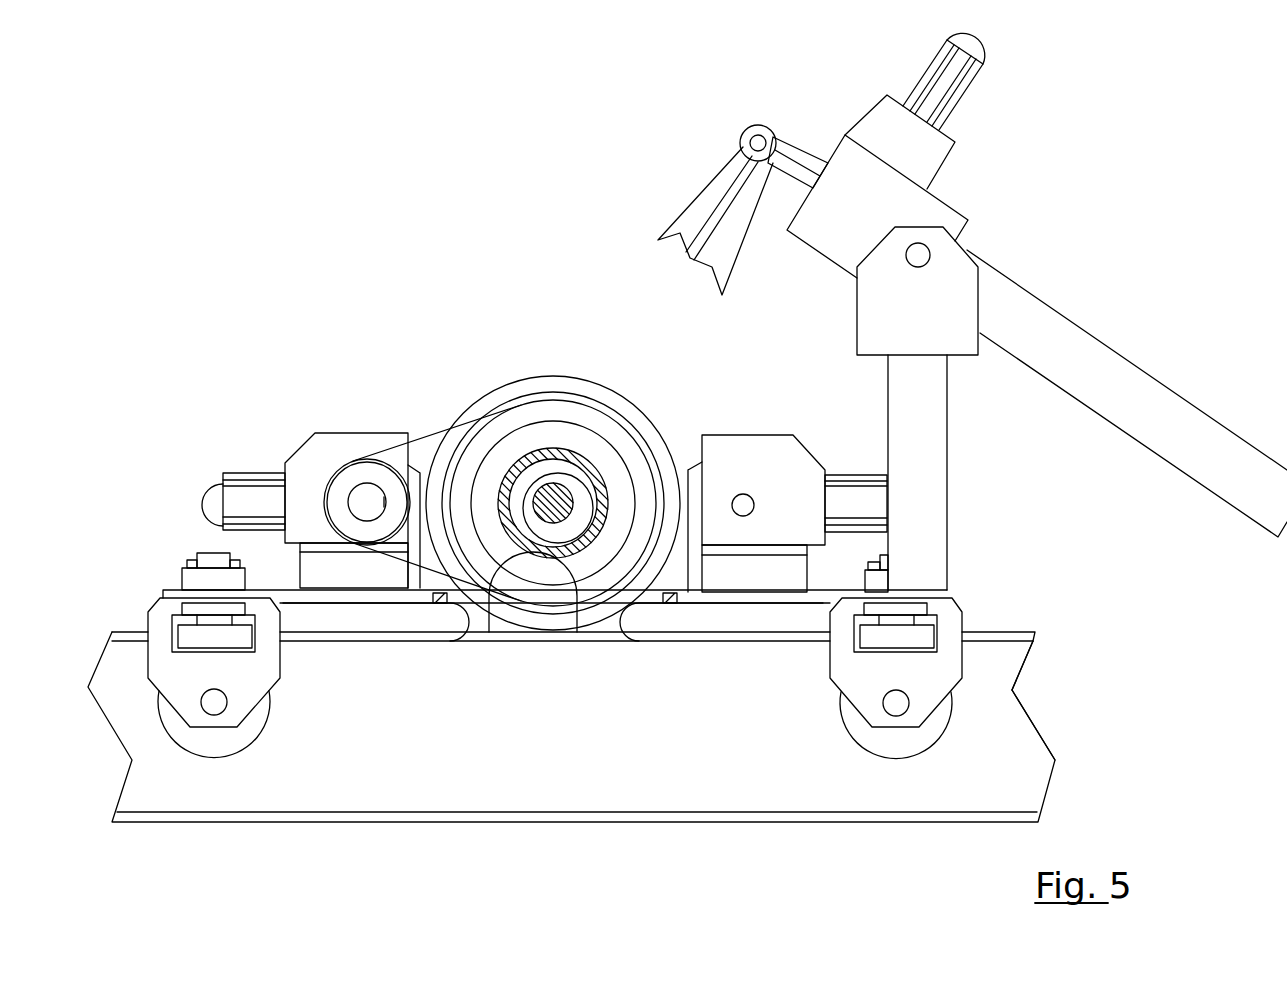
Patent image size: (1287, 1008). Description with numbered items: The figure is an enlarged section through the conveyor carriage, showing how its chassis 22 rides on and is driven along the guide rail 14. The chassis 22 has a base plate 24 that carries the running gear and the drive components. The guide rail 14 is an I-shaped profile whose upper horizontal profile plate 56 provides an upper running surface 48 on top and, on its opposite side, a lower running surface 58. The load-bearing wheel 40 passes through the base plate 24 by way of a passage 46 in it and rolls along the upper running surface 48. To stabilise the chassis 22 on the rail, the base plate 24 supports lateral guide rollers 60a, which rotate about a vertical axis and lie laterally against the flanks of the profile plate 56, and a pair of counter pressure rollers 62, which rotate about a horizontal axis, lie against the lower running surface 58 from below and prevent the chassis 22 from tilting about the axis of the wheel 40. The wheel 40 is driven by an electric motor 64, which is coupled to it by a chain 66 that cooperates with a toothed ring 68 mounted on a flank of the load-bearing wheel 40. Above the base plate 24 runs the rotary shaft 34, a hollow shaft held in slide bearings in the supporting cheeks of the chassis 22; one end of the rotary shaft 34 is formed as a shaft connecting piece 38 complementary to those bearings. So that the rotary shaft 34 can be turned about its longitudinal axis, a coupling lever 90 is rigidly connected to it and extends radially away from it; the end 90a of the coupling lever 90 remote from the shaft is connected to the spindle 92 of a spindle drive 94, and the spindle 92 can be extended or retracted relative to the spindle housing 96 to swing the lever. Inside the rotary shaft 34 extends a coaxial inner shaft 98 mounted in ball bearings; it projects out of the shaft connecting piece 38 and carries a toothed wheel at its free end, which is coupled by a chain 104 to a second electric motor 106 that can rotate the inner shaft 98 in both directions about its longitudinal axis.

The guide rail 14 is at (1007, 777).
The chassis 22 is at (1027, 574).
The base plate 24 is at (327, 593).
The rotary shaft 34 is at (560, 557).
The shaft connecting piece 38 is at (530, 546).
The load-bearing wheel 40 is at (620, 614).
The passage 46 is at (450, 594).
The upper running surface 48 is at (1018, 635).
The upper horizontal profile plate 56 is at (1035, 642).
The lower running surface 58 is at (1013, 690).
The lateral guide rollers 60a is at (185, 635).
The counter pressure rollers 62 is at (220, 738).
The electric motor 64 is at (248, 502).
The chain 66 is at (428, 440).
The toothed ring 68 is at (523, 412).
The coupling lever 90 is at (696, 216).
The end of the coupling lever 90a is at (760, 143).
The spindle 92 is at (793, 172).
The spindle drive 94 is at (1013, 167).
The spindle housing 96 is at (1033, 330).
The inner shaft 98 is at (553, 492).
The chain 104 is at (692, 465).
The electric motor 106 is at (860, 504).